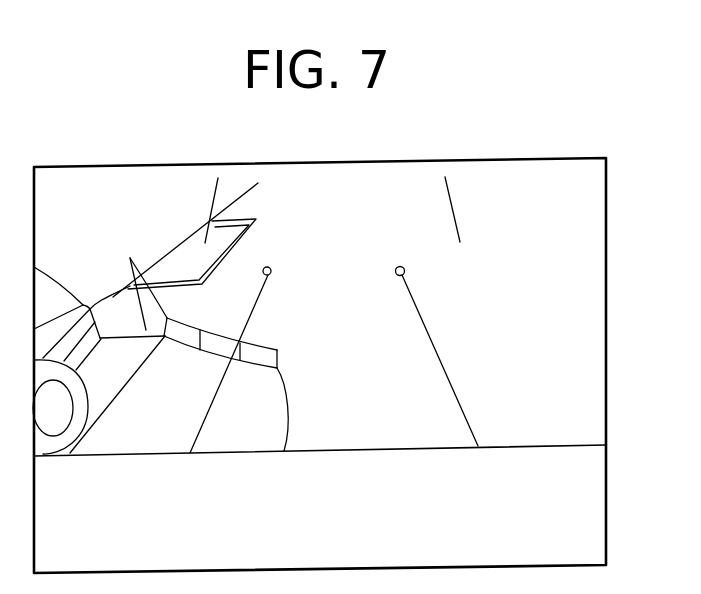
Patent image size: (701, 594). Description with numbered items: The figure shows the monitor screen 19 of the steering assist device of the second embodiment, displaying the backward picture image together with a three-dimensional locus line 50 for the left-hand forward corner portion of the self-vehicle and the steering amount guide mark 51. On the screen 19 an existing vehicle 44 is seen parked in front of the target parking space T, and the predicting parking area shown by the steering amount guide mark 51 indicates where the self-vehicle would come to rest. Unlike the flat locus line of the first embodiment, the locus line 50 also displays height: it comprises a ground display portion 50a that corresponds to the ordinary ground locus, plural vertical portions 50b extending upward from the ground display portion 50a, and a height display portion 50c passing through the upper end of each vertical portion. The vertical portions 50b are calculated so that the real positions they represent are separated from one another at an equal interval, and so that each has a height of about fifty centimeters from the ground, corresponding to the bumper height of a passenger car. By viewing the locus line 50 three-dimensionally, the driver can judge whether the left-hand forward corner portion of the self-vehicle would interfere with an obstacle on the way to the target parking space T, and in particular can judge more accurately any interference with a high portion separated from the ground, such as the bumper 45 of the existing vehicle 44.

The monitor screen 19 is at (607, 272).
The existing vehicle 44 is at (55, 279).
The bumper of another vehicle 45 is at (103, 310).
The steering amount guide mark 51 is at (173, 259).
The target parking space T is at (256, 221).
The locus line 50 is at (264, 337).
The ground display portion 50a is at (171, 342).
The vertical portions 50b is at (207, 354).
The height display portion 50c is at (195, 322).